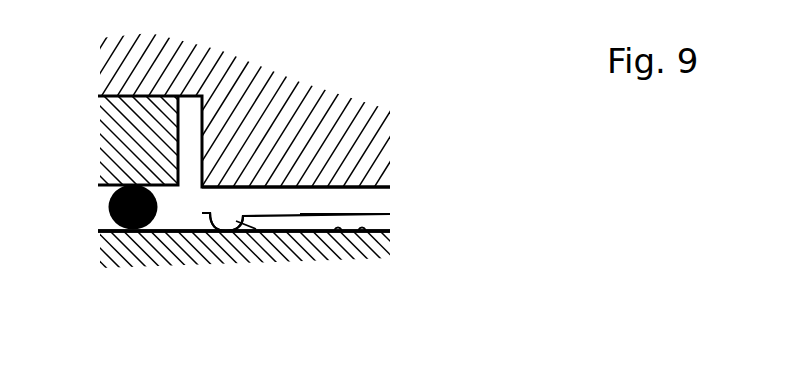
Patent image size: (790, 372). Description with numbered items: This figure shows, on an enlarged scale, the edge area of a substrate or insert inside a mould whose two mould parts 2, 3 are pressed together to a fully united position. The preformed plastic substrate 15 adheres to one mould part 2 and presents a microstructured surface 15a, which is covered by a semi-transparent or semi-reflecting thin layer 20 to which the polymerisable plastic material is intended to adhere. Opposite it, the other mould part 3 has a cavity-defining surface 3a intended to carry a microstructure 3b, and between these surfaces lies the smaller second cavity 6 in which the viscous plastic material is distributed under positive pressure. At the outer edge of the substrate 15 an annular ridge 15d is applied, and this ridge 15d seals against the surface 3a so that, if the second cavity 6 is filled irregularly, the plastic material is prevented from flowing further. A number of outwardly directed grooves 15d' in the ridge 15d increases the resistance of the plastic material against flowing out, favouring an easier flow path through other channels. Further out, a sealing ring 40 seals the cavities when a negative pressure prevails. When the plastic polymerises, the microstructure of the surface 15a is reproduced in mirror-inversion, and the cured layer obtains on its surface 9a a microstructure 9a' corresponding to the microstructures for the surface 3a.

The mould part 2 is at (290, 58).
The mould part 3 is at (114, 311).
The second cavity 6 is at (385, 221).
The sealing ring 40 is at (109, 205).
The substrate 15 is at (373, 205).
The surface 15a is at (380, 213).
The layer 20 is at (365, 201).
The grooves 15d' is at (195, 267).
The annular ridge 15d is at (278, 272).
The cavity-defining surface 3a is at (380, 237).
The microstructure 3b is at (380, 237).
The surface 9a is at (430, 274).
The microstructure 9a' is at (430, 274).